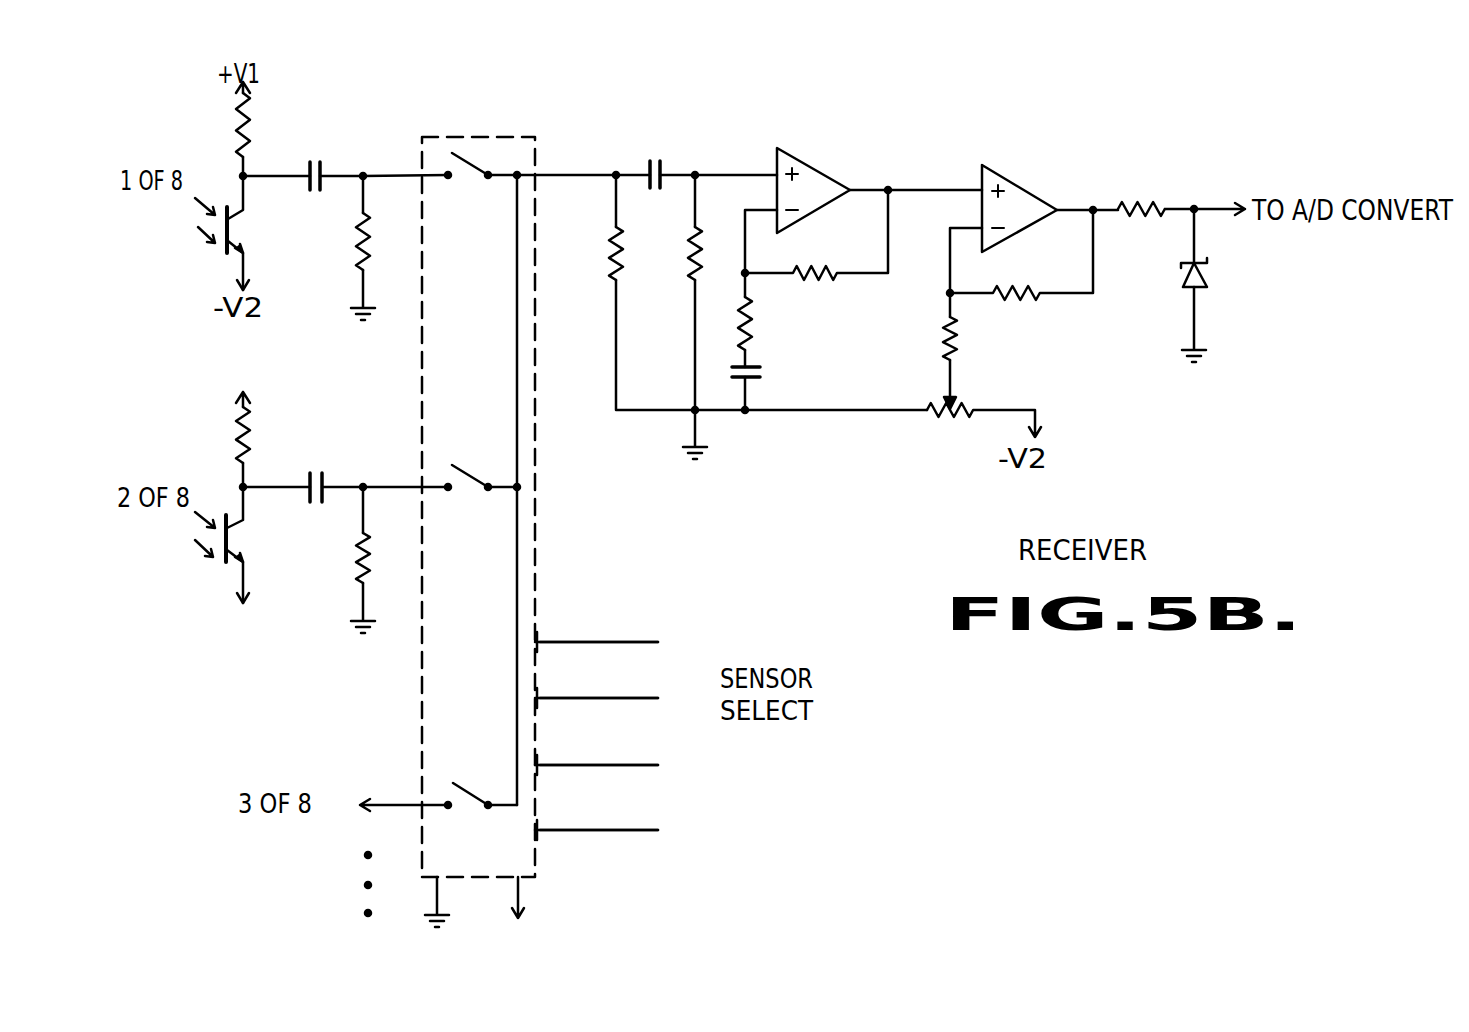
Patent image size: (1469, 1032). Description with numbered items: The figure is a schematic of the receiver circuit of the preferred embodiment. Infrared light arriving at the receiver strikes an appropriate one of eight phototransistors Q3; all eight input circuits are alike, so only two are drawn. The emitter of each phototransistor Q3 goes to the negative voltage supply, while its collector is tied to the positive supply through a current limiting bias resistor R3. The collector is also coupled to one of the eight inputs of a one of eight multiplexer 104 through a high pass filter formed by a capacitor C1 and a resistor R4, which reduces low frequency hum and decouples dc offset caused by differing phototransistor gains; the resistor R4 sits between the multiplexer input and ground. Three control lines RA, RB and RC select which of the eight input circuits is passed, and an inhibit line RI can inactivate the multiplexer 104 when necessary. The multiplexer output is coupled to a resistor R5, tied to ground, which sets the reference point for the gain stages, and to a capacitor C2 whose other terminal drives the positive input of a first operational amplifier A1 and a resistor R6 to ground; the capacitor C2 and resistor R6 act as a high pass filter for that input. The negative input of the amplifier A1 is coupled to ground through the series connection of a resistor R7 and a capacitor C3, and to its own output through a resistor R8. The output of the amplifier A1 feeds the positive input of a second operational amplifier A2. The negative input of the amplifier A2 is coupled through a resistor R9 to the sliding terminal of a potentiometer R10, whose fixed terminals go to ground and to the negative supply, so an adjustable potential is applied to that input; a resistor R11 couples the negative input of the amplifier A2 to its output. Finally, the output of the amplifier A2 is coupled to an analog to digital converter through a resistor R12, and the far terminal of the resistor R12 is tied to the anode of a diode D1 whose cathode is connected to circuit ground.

The current limiting bias resistor R3 is at (226, 125).
The phototransistor Q3 is at (234, 233).
The capacitor C1 is at (312, 161).
The resistor R4 is at (350, 241).
The one of eight multiplexer 104 is at (487, 366).
The control line RA is at (599, 625).
The control line RB is at (599, 682).
The control line RC is at (599, 749).
The inhibit line RI is at (599, 814).
The capacitor C2 is at (656, 159).
The resistor R5 is at (600, 253).
The resistor R6 is at (681, 253).
The first operational amplifier A1 is at (816, 170).
The resistor R8 is at (816, 235).
The resistor R7 is at (763, 323).
The capacitor C3 is at (764, 374).
The second operational amplifier A2 is at (1020, 186).
The resistor R11 is at (1021, 255).
The resistor R9 is at (967, 338).
The potentiometer R10 is at (984, 428).
The resistor R12 is at (1141, 194).
The diode D1 is at (1210, 285).